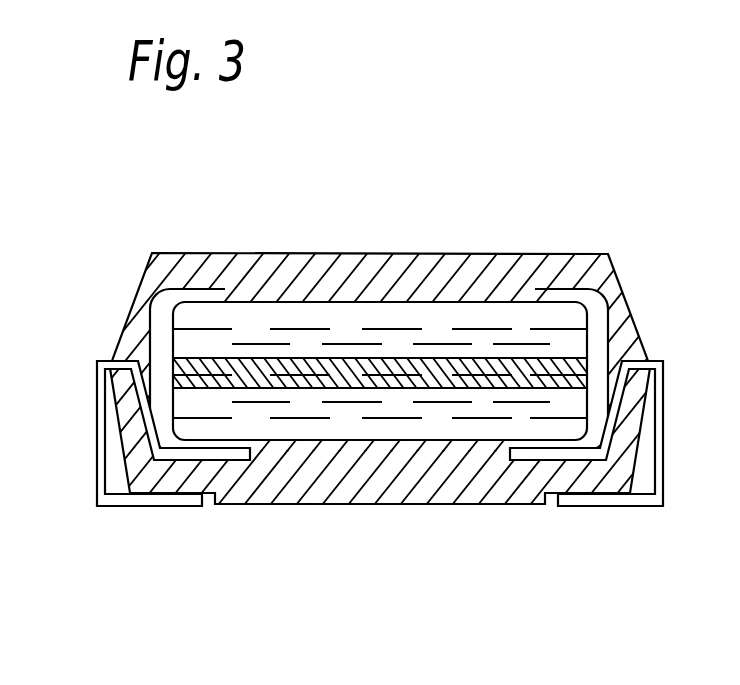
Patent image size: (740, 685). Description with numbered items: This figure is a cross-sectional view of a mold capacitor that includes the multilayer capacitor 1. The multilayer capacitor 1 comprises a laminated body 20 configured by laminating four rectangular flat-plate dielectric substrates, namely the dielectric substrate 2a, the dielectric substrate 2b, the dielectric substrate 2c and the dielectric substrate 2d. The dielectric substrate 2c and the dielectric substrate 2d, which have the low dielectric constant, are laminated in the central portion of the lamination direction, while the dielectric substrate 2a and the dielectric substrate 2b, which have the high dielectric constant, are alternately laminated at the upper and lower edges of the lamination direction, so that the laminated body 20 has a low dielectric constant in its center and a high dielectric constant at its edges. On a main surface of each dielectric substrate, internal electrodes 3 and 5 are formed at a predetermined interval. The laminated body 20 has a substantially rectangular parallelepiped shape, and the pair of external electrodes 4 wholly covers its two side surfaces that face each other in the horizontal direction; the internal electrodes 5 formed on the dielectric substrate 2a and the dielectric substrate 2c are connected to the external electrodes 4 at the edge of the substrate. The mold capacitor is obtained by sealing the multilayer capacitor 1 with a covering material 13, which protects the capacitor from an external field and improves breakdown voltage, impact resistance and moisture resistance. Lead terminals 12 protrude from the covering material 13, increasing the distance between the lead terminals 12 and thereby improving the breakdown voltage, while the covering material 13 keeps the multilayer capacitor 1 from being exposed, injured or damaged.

The multilayer capacitor 1 is at (315, 297).
The dielectric substrate 2a is at (348, 345).
The dielectric substrate 2b is at (404, 356).
The dielectric substrate 2c is at (350, 373).
The dielectric substrate 2d is at (395, 383).
The internal electrode 3 is at (222, 327).
The external electrode 4 is at (163, 303).
The internal electrode 5 is at (312, 423).
The lead terminal 12 is at (96, 423).
The covering material 13 is at (572, 260).
The laminated body 20 is at (500, 290).